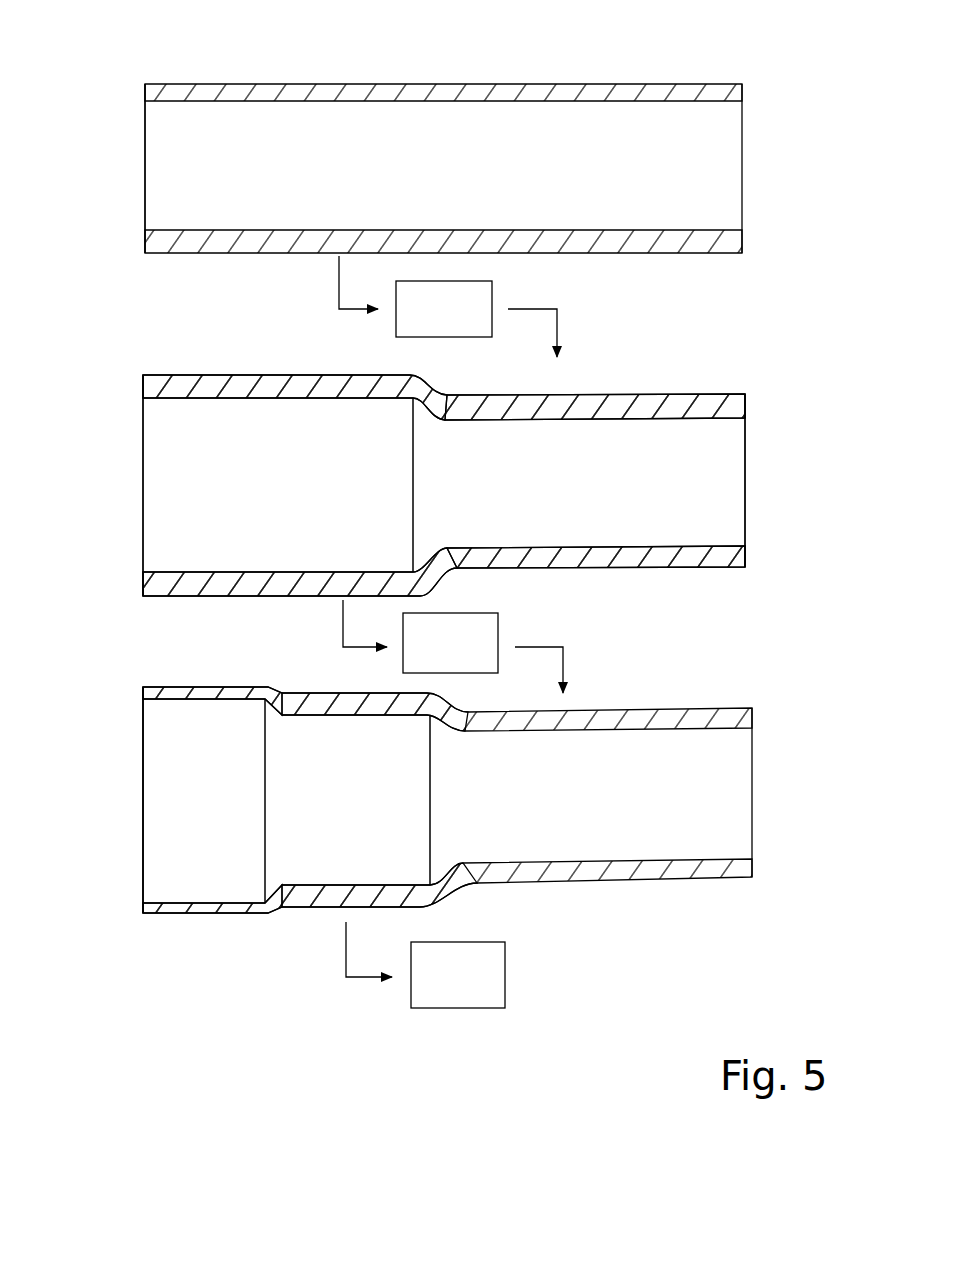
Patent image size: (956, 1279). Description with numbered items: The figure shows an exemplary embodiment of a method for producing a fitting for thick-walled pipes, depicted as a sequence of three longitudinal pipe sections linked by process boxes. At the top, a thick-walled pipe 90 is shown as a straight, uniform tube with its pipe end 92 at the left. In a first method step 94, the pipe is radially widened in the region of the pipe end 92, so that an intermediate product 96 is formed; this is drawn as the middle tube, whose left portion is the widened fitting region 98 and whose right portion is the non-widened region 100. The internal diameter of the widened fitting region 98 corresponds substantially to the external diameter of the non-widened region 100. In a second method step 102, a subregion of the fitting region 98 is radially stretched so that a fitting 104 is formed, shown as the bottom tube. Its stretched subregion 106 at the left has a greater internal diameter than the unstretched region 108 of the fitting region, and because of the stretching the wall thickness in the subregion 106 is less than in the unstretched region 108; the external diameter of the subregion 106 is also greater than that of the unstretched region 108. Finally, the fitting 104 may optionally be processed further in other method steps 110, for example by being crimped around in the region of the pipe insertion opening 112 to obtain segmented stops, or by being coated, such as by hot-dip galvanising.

The thick-walled pipe 90 is at (661, 46).
The pipe end 92 is at (118, 182).
The first method step 94 is at (448, 306).
The intermediate product 96 is at (684, 343).
The widened fitting region 98 is at (246, 366).
The non-widened region 100 is at (608, 394).
The second method step 102 is at (453, 646).
The fitting 104 is at (690, 648).
The stretched subregion 106 is at (185, 686).
The unstretched region 108 is at (325, 692).
The other method steps 110 is at (425, 965).
The pipe insertion opening 112 is at (120, 727).